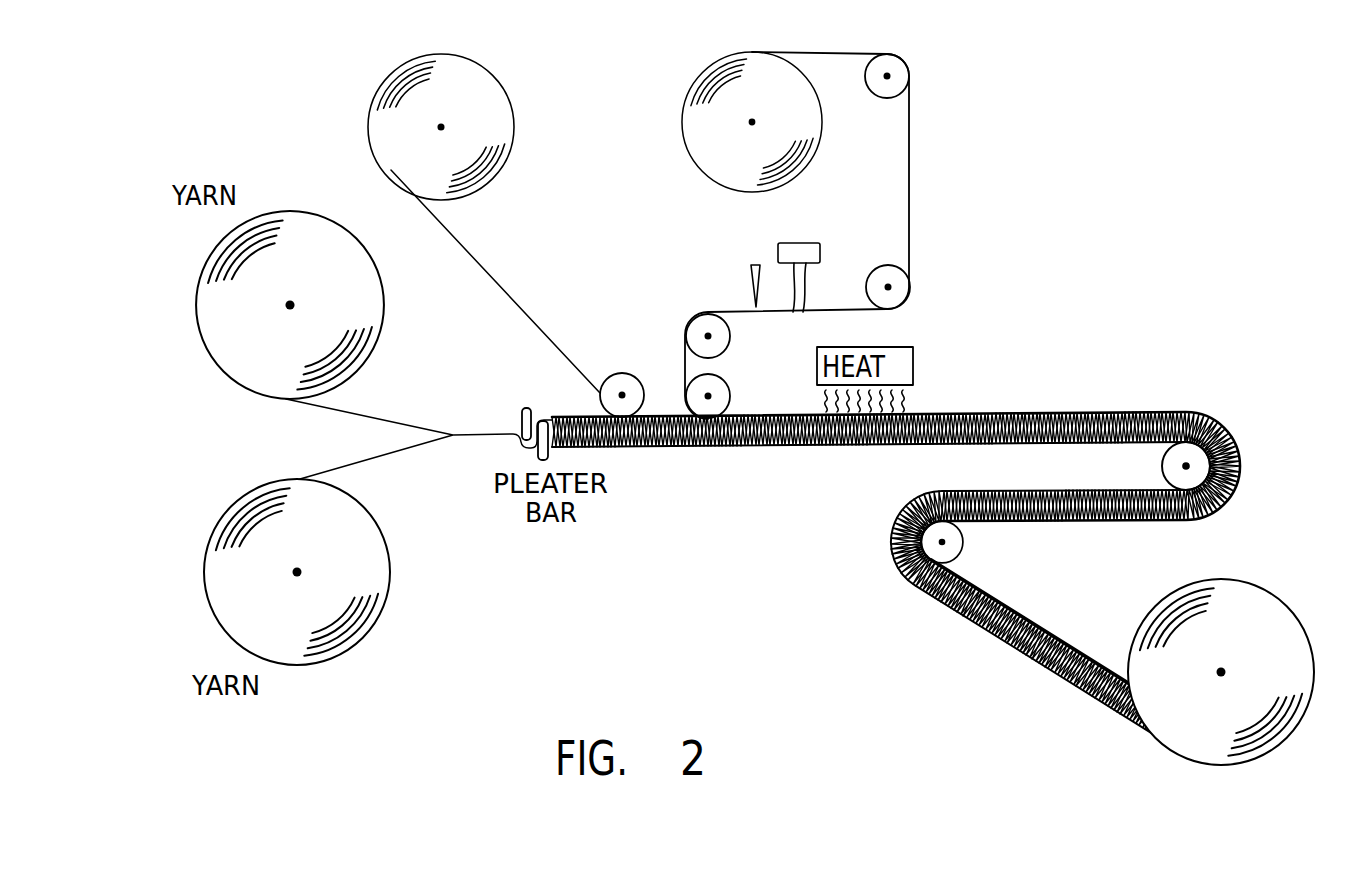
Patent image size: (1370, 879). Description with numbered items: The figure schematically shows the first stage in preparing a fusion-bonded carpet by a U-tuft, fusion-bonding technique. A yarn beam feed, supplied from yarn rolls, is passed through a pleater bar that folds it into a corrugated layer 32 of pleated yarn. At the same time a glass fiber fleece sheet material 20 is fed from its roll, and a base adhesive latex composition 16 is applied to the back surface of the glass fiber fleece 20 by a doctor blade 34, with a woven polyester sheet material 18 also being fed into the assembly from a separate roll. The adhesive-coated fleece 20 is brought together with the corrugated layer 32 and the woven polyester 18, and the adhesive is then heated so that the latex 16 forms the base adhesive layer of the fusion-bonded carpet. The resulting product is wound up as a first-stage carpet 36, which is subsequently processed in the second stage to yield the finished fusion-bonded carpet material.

The woven polyester sheet material 18 is at (495, 109).
The glass fiber fleece sheet material 20 is at (807, 104).
The doctor blade 34 is at (748, 277).
The base adhesive latex composition 16 is at (803, 302).
The corrugated layer 32 is at (716, 443).
The Stage 1 carpet 36 is at (1262, 598).